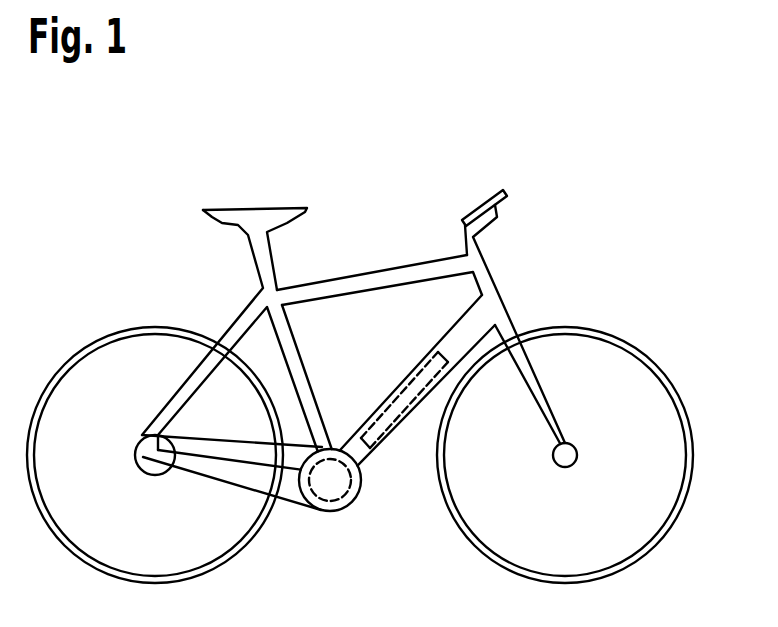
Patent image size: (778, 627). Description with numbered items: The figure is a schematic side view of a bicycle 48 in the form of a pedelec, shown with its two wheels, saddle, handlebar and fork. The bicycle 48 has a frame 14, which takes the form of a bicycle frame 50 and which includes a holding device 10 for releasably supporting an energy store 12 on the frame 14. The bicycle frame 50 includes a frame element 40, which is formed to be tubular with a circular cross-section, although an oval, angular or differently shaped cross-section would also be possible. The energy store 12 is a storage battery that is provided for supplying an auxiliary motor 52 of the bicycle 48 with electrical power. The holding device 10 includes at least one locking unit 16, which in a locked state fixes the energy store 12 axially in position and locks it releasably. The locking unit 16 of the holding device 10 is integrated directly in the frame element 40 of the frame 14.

The bicycle 48 is at (382, 188).
The frame 14 is at (340, 286).
The bicycle frame 50 is at (428, 270).
The frame element 40 is at (472, 325).
The holding device 10 is at (392, 430).
The energy store 12 is at (413, 368).
The locking unit 16 is at (370, 427).
The auxiliary motor 52 is at (340, 512).